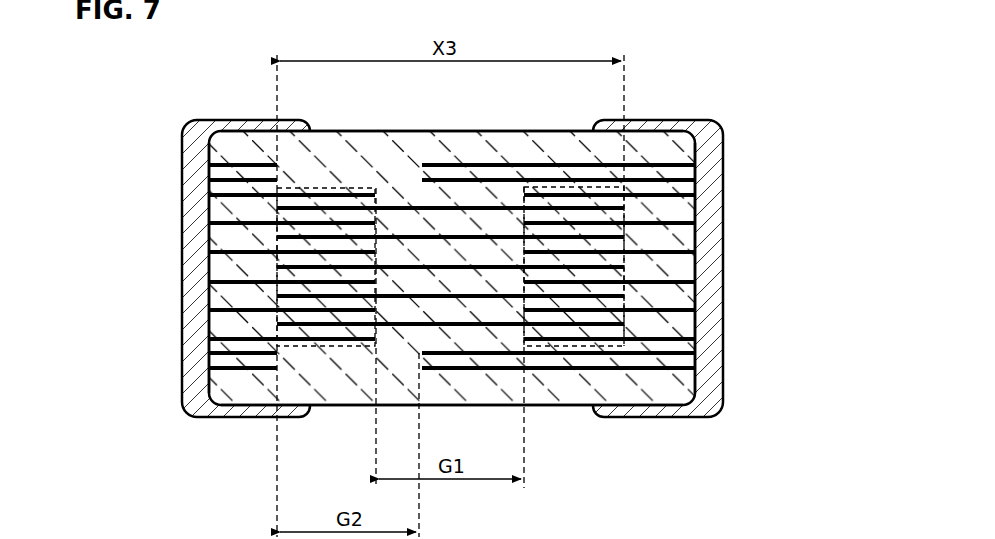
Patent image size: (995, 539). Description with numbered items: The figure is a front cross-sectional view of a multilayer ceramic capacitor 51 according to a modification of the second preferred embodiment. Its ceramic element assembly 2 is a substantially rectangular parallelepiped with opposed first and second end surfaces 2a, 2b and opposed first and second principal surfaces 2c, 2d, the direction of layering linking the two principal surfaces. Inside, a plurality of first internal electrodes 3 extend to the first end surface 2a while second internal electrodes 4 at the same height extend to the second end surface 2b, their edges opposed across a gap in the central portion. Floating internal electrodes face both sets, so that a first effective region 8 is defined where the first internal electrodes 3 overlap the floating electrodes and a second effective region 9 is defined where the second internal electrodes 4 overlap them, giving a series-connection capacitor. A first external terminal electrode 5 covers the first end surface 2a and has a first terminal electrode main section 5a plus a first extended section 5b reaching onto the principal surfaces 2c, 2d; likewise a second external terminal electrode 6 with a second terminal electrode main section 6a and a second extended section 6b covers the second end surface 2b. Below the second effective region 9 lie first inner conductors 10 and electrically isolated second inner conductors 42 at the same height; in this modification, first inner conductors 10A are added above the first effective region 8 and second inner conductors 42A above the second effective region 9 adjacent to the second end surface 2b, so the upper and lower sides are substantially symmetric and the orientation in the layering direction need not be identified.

The multilayer ceramic capacitor 51 is at (181, 110).
The ceramic element assembly 2 is at (400, 128).
The first end surface 2a is at (697, 137).
The second end surface 2b is at (216, 151).
The first principal surface 2c is at (502, 131).
The second principal surface 2d is at (322, 405).
The first internal electrode 3 is at (684, 194).
The second internal electrode 4 is at (218, 311).
The first external terminal electrode 5 is at (862, 108).
The first terminal electrode main section 5a is at (722, 165).
The first extended section 5b is at (672, 121).
The second external terminal electrode 6 is at (42, 377).
The second terminal electrode main section 6a is at (213, 378).
The second extended section 6b is at (215, 417).
The first effective region 8 is at (553, 182).
The second effective region 9 is at (361, 182).
The first inner conductor 10 is at (675, 350).
The first inner conductor 10A is at (690, 140).
The second inner conductor 42 is at (216, 364).
The second inner conductor 42A is at (246, 164).